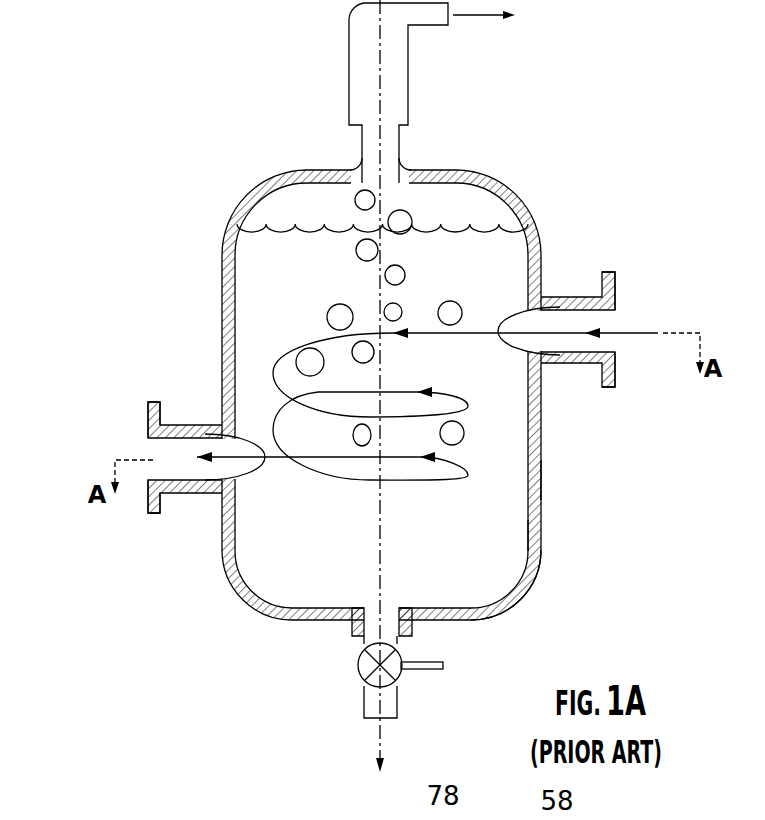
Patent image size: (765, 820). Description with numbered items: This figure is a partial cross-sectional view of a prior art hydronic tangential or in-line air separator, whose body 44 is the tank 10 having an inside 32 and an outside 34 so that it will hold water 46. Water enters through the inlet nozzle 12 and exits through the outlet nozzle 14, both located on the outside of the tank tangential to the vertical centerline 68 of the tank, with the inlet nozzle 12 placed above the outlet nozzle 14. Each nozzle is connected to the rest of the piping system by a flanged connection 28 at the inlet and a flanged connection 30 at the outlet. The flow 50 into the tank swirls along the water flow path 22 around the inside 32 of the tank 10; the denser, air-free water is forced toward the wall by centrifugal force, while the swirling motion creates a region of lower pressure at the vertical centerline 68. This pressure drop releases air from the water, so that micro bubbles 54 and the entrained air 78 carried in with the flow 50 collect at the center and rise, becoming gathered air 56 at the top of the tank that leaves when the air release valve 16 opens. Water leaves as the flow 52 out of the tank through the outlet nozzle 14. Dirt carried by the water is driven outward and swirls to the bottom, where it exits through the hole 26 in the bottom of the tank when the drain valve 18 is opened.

The air separator tank 10 is at (548, 199).
The inlet nozzle 12 is at (553, 311).
The outlet nozzle 14 is at (149, 493).
The air release valve 16 is at (410, 61).
The drain valve 18 is at (363, 700).
The water flow path 22 is at (272, 372).
The hole in bottom of tank 26 is at (372, 604).
The inlet flanged connection 28 is at (609, 268).
The outlet flanged connection 30 is at (152, 516).
The inside of tank 32 is at (524, 540).
The outside of tank 34 is at (541, 486).
The body of tank 44 is at (528, 606).
The water in tank 46 is at (247, 285).
The flow into tank 50 is at (633, 337).
The flow out of tank 52 is at (218, 488).
The air micro bubbles in water 54 is at (400, 193).
The gathered air 56 is at (353, 202).
The vertical centerline of tank 68 is at (378, 40).
The entrained air in water 78 is at (405, 275).